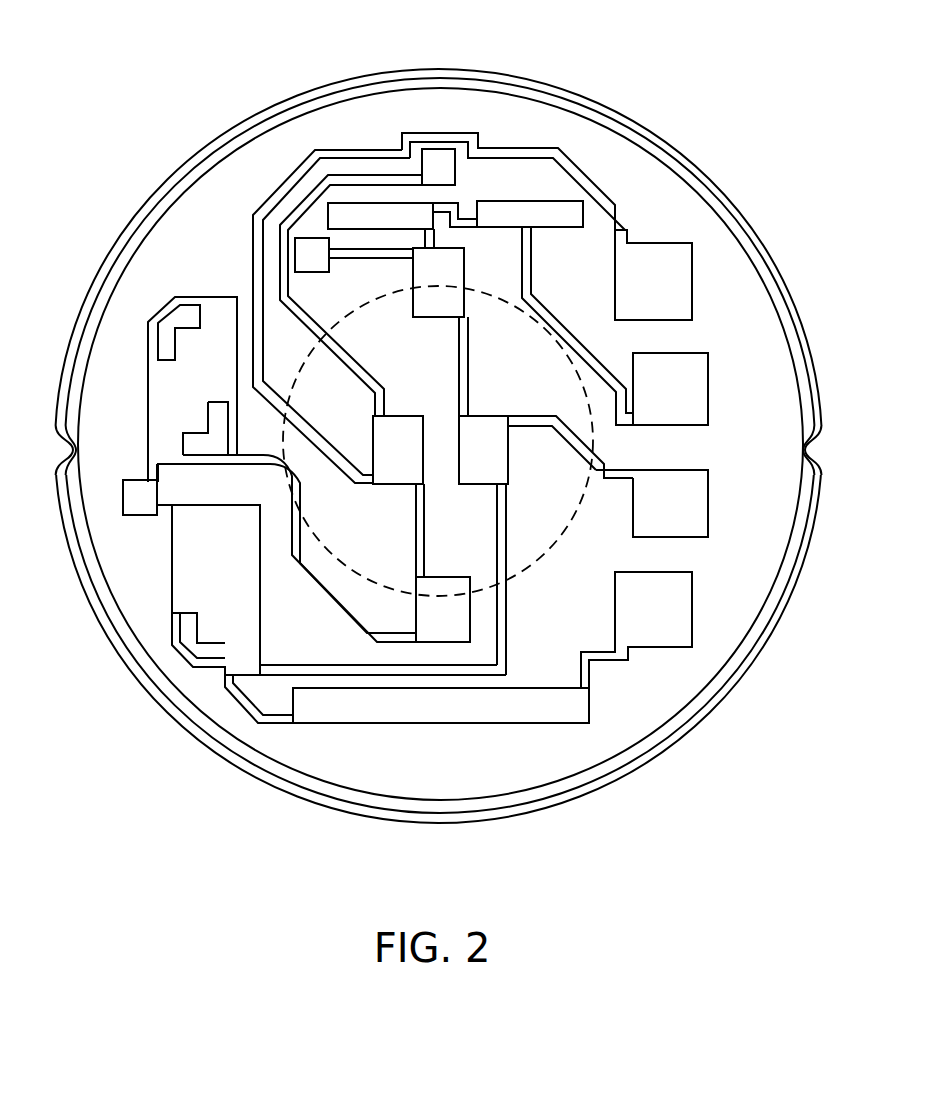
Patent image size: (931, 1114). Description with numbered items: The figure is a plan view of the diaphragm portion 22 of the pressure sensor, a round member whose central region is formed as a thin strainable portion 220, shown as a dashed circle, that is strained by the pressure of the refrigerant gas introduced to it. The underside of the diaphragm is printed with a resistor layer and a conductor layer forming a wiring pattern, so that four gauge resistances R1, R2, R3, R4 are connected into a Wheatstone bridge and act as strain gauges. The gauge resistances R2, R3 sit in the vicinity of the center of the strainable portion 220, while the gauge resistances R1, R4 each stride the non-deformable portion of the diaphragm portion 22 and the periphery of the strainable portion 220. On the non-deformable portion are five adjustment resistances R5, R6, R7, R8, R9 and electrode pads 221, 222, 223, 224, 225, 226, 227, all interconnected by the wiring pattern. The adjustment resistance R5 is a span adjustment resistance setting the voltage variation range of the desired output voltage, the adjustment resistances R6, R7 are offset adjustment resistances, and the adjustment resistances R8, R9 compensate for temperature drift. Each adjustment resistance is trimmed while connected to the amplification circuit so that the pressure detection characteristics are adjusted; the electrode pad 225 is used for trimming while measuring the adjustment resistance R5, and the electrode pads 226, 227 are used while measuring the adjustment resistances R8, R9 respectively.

The diaphragm portion 22 is at (670, 195).
The strainable portion 220 is at (517, 580).
The electrode pad 221 is at (682, 270).
The electrode pad 222 is at (693, 360).
The electrode pad 223 is at (687, 525).
The electrode pad 224 is at (653, 640).
The electrode pad 225 is at (138, 495).
The electrode pad 226 is at (313, 252).
The electrode pad 227 is at (441, 165).
The gauge resistance R1 is at (438, 282).
The gauge resistance R2 is at (398, 450).
The gauge resistance R3 is at (483, 450).
The gauge resistance R4 is at (443, 609).
The span adjustment resistance R5 is at (441, 705).
The offset adjustment resistance R6 is at (208, 590).
The offset adjustment resistance R7 is at (192, 389).
The adjustment resistance R8 is at (380, 216).
The adjustment resistance R9 is at (530, 214).